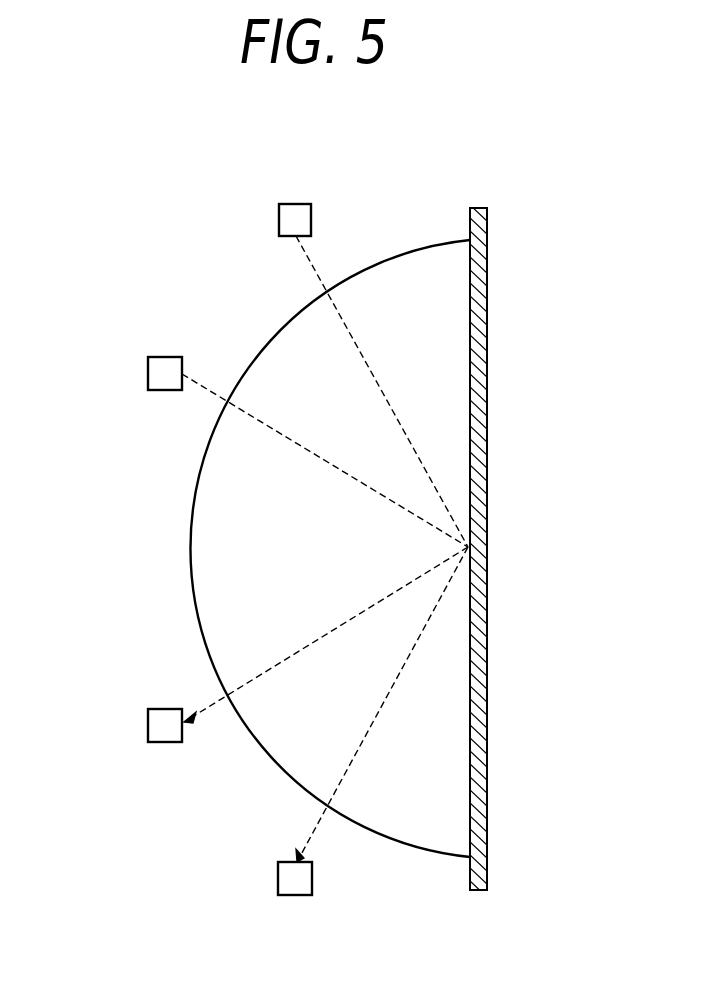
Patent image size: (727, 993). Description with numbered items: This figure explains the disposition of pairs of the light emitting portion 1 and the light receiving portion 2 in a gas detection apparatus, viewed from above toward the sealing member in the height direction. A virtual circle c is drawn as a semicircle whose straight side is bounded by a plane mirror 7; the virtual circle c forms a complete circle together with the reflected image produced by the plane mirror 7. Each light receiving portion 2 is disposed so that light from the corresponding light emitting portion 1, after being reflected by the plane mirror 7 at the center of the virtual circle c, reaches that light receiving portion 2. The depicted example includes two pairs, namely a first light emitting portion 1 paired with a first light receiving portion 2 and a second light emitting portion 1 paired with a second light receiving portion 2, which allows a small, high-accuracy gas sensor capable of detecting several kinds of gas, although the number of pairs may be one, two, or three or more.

The plane mirror 7 is at (483, 333).
The virtual circle c is at (397, 255).
The light emitting portion 1 is at (279, 221).
The light receiving portion 2 is at (148, 726).